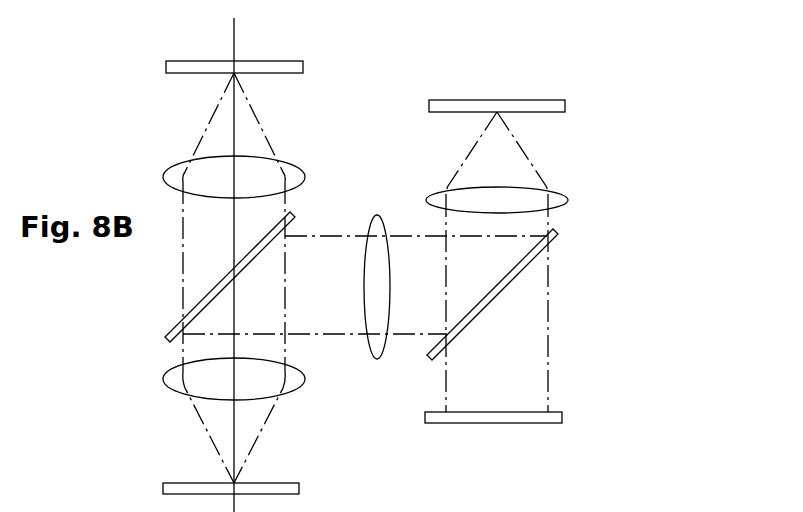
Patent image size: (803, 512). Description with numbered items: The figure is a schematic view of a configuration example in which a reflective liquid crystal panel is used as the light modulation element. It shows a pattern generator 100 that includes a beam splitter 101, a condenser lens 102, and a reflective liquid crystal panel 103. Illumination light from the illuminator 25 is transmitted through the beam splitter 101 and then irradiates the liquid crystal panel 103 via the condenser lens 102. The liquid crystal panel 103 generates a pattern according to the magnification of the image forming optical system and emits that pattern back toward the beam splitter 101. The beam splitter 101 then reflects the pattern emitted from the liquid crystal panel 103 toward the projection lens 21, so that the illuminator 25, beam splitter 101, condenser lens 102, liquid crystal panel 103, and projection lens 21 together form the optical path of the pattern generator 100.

The projection lens 21 is at (378, 215).
The illuminator 25 is at (491, 424).
The pattern generator 100 is at (610, 182).
The beam splitter 101 is at (556, 245).
The condenser lens 102 is at (558, 189).
The reflective liquid crystal panel 103 is at (540, 100).